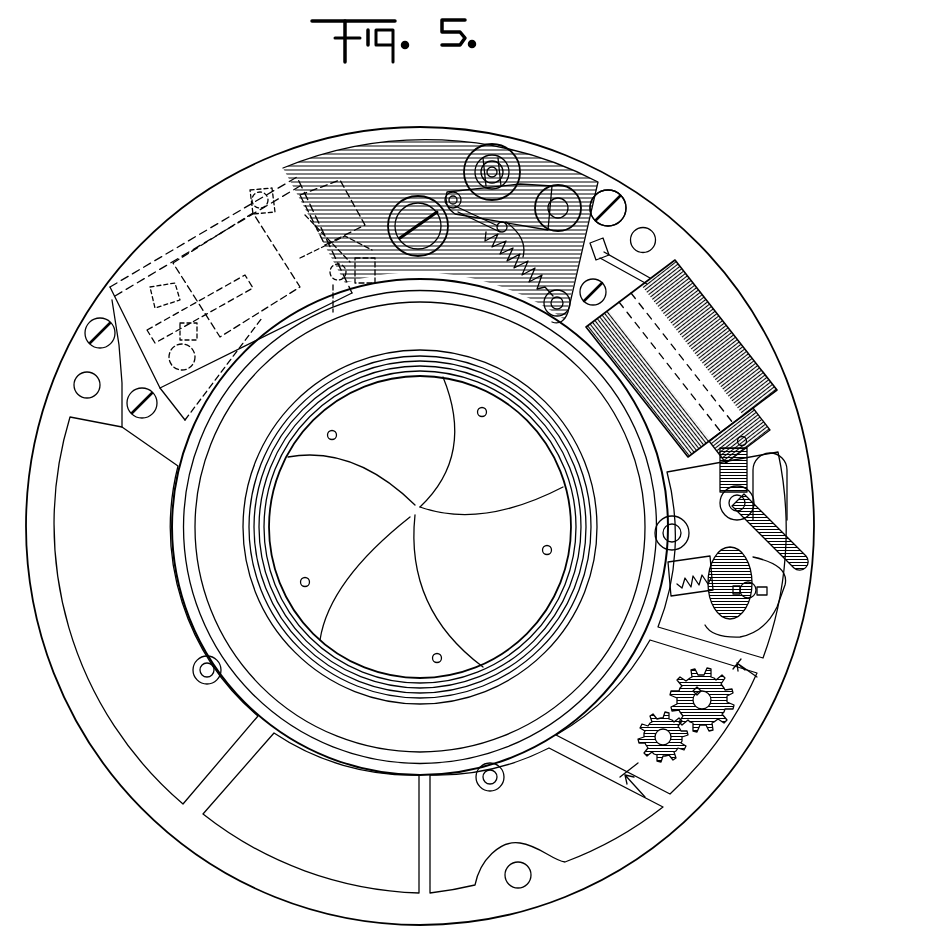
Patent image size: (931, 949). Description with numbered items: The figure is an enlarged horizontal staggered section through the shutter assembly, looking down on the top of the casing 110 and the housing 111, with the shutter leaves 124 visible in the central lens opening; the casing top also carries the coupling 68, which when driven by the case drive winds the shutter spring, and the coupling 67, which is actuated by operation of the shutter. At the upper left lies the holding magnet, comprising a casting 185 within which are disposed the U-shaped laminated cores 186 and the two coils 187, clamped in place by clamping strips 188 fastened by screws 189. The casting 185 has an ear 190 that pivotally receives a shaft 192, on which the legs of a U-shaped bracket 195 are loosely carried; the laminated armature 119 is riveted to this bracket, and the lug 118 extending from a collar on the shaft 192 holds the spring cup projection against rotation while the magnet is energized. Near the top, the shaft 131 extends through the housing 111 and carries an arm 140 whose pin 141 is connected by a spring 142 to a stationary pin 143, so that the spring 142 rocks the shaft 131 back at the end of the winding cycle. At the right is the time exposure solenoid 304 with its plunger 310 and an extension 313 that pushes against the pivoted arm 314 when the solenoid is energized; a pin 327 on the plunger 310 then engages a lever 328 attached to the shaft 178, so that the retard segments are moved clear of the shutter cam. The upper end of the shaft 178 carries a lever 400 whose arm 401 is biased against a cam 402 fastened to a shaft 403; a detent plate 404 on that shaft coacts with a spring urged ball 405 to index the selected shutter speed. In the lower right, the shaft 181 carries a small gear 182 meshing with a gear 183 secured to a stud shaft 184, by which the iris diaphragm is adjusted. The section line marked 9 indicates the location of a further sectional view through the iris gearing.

The casing 110 is at (103, 763).
The housing 111 is at (393, 153).
The lug 118 is at (375, 297).
The shutter leaves 124 is at (470, 523).
The coils 187 is at (200, 233).
The clamping strips 188 is at (271, 192).
The screws 189 is at (263, 227).
The cores 186 is at (248, 277).
The casting 185 is at (306, 305).
The armature 119 is at (317, 197).
The U-shaped bracket 195 is at (337, 238).
The ear 190 is at (340, 263).
The shaft 192 is at (333, 308).
The coupling 68 is at (425, 245).
The coupling 67 is at (492, 150).
The arm 140 is at (523, 203).
The shaft 131 is at (565, 198).
The pin 141 is at (451, 193).
The spring 142 is at (500, 248).
The stationary pin 143 is at (553, 312).
The extension 313 is at (589, 251).
The arm 314 is at (627, 208).
The time exposure solenoid 304 is at (708, 290).
The plunger 310 is at (753, 437).
The pin 327 is at (738, 438).
The lever 328 is at (720, 478).
The lever 400 is at (720, 503).
The shaft 178 is at (742, 500).
The arm 401 is at (795, 547).
The cam 402 is at (720, 567).
The shaft 403 is at (748, 582).
The detent plate 404 is at (763, 617).
The spring urged ball 405 is at (707, 608).
The gear 183 is at (673, 693).
The stud shaft 184 is at (700, 703).
The small gear 182 is at (643, 728).
The shaft 181 is at (663, 745).
The section line 9 is at (684, 728).